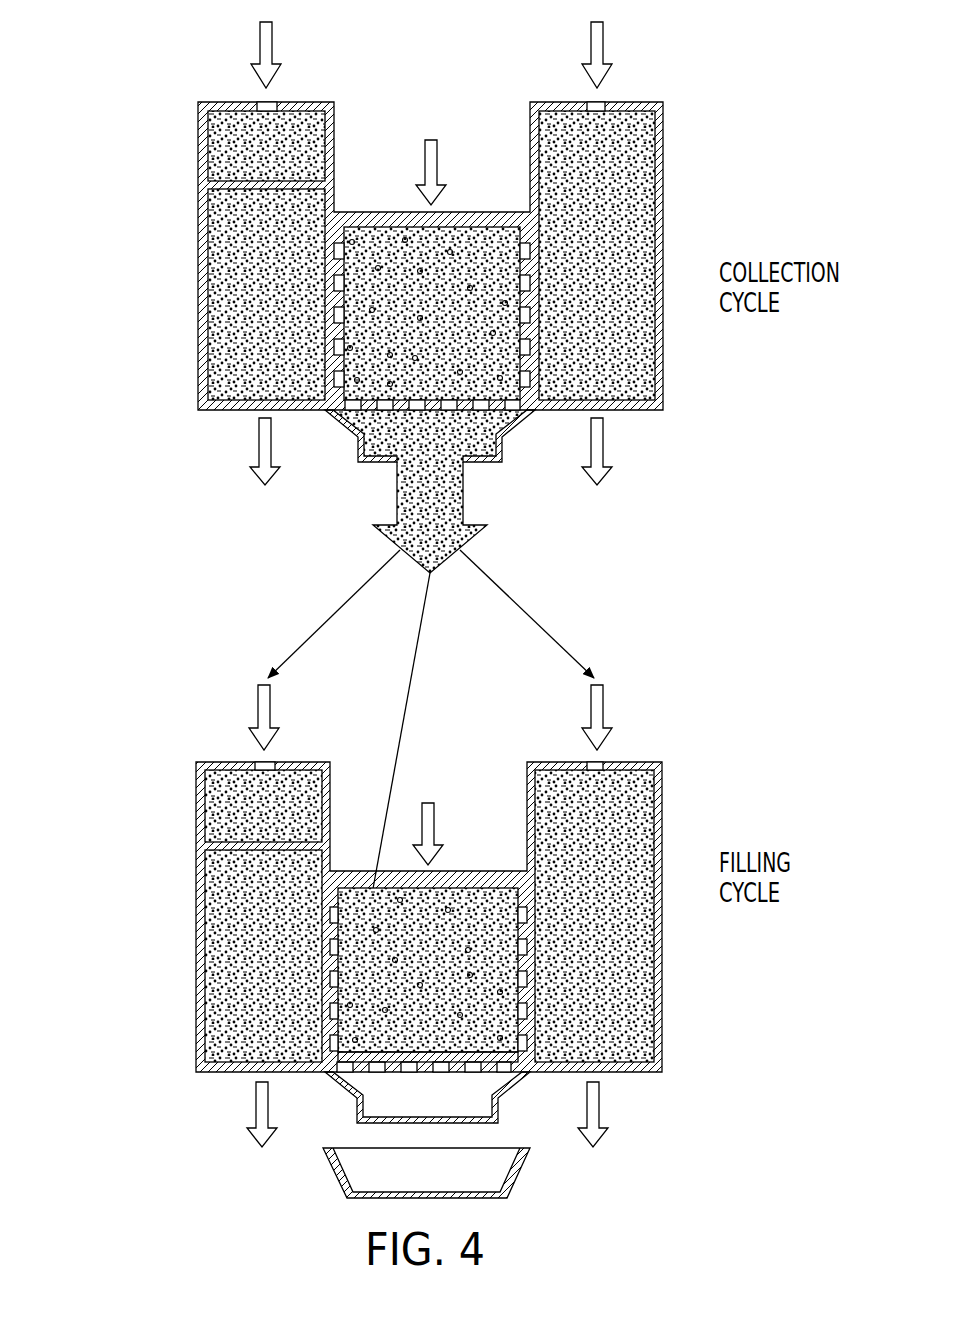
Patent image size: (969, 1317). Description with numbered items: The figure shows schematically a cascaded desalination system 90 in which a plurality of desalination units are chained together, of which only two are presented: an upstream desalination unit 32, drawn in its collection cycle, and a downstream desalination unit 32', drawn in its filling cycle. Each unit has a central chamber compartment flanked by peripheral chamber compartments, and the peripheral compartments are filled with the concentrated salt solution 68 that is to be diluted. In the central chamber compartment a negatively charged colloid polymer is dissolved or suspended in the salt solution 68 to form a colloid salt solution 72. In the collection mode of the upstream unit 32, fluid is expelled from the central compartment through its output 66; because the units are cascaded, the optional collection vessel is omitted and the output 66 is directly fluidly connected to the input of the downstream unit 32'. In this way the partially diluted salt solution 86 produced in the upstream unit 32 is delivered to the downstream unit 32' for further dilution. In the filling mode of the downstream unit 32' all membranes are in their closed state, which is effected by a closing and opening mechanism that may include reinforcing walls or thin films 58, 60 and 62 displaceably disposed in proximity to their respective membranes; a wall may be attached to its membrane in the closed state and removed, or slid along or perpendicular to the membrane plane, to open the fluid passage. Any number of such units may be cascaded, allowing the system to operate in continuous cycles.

The desalination unit 32 is at (361, 215).
The downstream desalination unit 32' is at (359, 875).
The salt solution 68 is at (273, 48).
The colloid salt solution 72 is at (380, 243).
The output 66 is at (345, 452).
The partially diluted salt solution 86 is at (418, 493).
The reinforcing wall 58 is at (338, 915).
The reinforcing wall 62 is at (437, 1052).
The reinforcing wall 60 is at (510, 1045).
The cascaded desalination system 90 is at (750, 1052).